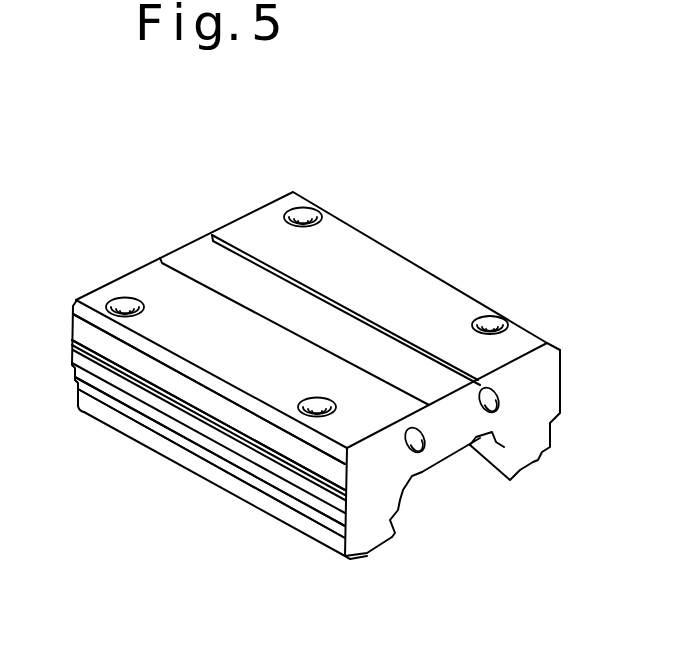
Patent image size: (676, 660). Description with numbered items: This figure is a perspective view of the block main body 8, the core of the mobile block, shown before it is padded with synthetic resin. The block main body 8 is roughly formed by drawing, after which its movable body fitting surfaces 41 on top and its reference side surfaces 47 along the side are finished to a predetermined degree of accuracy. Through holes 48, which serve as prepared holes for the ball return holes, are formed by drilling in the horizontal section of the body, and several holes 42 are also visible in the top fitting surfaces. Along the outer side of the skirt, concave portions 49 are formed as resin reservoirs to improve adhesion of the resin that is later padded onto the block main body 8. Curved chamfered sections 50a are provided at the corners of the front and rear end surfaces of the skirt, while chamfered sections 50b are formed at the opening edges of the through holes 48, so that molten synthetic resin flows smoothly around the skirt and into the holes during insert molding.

The block main body 8 is at (135, 462).
The movable body fitting surfaces 41 is at (177, 303).
The mounting holes 42 is at (117, 303).
The reference side surfaces 47 is at (246, 418).
The through holes 48 is at (450, 450).
The concave portions 49 is at (183, 447).
The chamfered sections 50a is at (335, 543).
The chamfered sections 50b is at (418, 448).